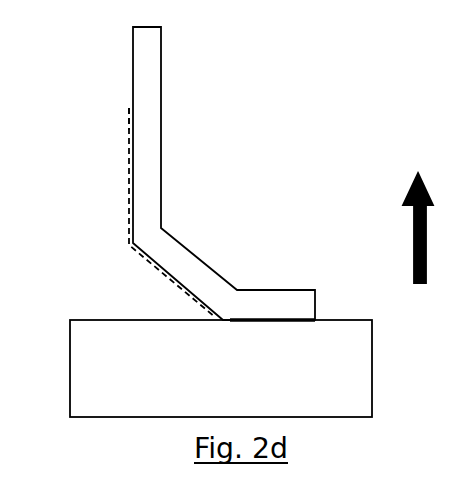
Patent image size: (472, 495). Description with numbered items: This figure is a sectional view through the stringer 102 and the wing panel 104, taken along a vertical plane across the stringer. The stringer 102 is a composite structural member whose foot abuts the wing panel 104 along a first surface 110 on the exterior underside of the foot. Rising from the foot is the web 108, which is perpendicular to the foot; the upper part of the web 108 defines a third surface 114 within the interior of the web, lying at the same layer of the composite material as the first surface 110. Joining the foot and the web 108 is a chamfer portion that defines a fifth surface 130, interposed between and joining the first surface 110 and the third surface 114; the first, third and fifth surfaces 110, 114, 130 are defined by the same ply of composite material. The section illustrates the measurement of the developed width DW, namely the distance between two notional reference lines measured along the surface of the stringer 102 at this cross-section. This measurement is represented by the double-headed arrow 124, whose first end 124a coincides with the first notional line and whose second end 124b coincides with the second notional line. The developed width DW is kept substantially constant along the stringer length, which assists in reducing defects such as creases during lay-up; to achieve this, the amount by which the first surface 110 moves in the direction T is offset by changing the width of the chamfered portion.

The stringer 102 is at (147, 71).
The wing panel 104 is at (343, 350).
The web 108 is at (148, 158).
The first surface 110 is at (248, 326).
The third surface 114 is at (130, 58).
The double-headed arrow 124 is at (130, 143).
The first end 124a is at (263, 319).
The second end 124b is at (127, 111).
The fifth surface 130 is at (143, 262).
The developed width DW is at (128, 207).
The direction T is at (408, 228).